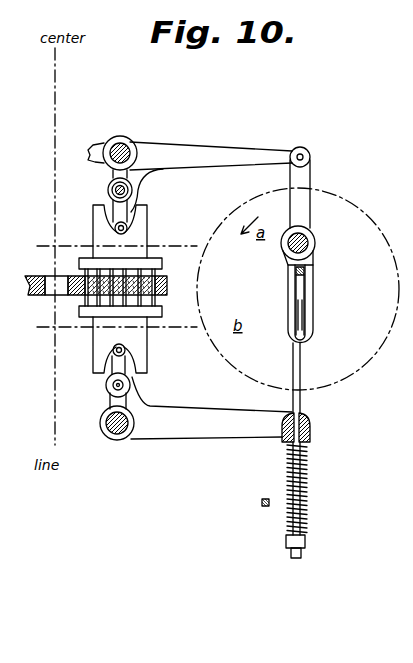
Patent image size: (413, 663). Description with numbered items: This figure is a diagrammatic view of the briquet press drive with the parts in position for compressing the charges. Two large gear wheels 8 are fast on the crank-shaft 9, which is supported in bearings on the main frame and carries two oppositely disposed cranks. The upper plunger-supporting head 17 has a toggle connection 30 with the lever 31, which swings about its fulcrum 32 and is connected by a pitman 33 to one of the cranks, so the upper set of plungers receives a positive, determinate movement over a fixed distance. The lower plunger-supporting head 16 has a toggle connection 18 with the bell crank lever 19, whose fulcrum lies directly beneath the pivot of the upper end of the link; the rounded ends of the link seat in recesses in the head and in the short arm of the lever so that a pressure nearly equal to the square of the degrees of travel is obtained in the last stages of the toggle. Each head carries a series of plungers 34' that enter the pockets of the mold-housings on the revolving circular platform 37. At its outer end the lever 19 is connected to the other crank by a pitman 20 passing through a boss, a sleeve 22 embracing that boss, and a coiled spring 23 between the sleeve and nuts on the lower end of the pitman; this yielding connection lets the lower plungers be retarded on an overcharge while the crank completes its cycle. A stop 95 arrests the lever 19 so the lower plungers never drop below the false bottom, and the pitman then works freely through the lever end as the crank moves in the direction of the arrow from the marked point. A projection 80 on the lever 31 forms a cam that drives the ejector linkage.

The large gear wheels 8 is at (374, 350).
The crank-shaft 9 is at (313, 291).
The plunger-supporting head 16 is at (163, 318).
The plunger-supporting head 17 is at (80, 264).
The toggle connection 18 is at (133, 380).
The lever 19 is at (208, 436).
The pitman 20 is at (300, 411).
The sleeve 22 is at (311, 441).
The coiled spring 23 is at (303, 533).
The toggle connection 30 is at (133, 195).
The lever 31 is at (222, 145).
The pivot pin 32 is at (128, 147).
The pitman 33 is at (305, 191).
The studs 34' is at (128, 297).
The circular platform 37 is at (94, 301).
The projection 80 is at (94, 158).
The stop 95 is at (262, 506).